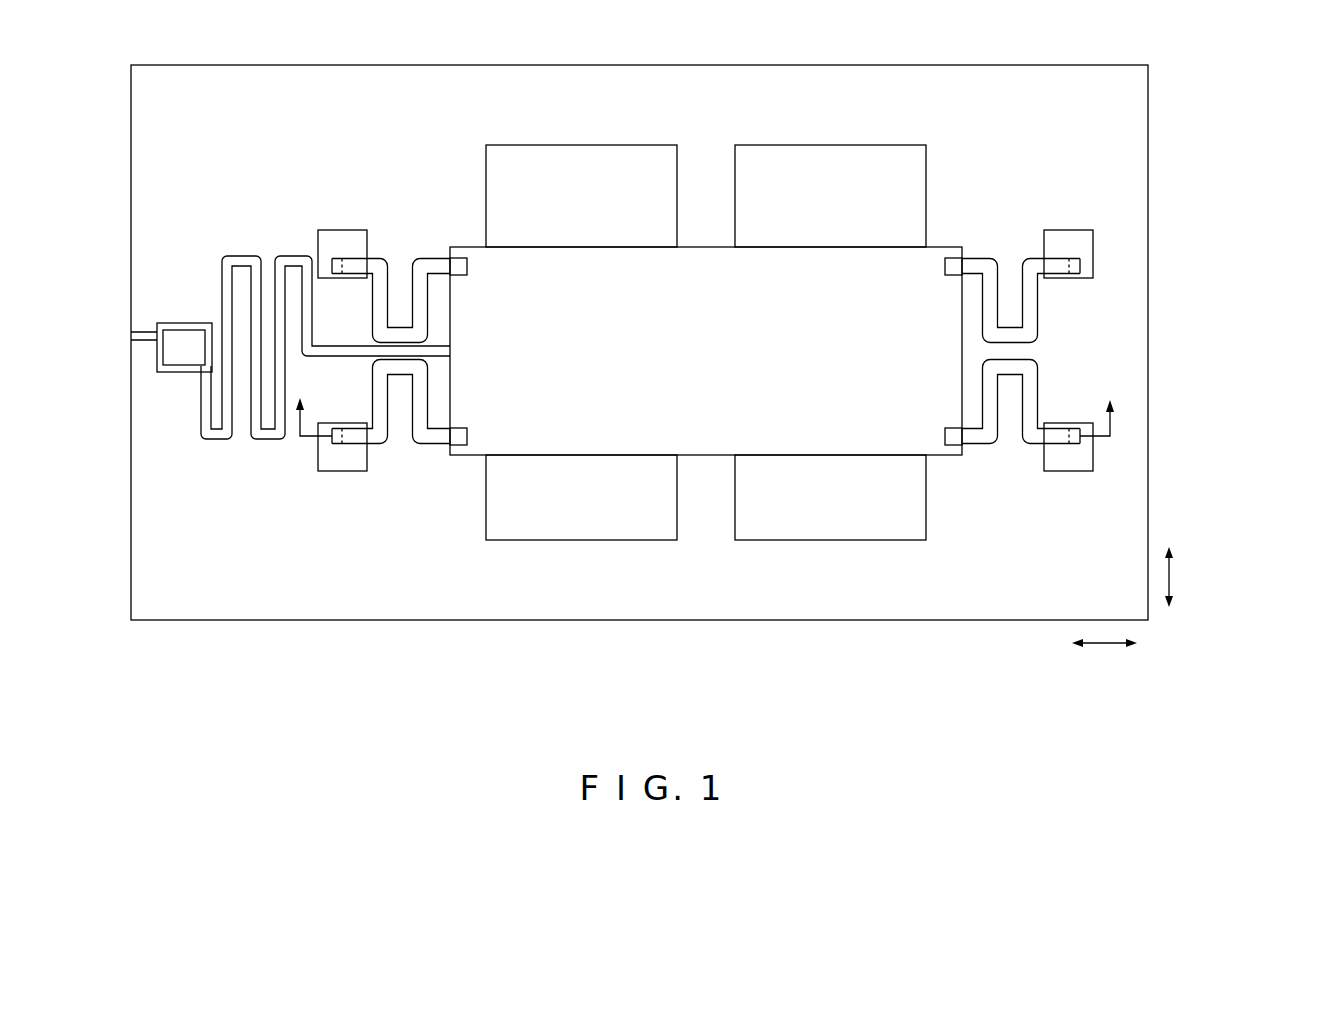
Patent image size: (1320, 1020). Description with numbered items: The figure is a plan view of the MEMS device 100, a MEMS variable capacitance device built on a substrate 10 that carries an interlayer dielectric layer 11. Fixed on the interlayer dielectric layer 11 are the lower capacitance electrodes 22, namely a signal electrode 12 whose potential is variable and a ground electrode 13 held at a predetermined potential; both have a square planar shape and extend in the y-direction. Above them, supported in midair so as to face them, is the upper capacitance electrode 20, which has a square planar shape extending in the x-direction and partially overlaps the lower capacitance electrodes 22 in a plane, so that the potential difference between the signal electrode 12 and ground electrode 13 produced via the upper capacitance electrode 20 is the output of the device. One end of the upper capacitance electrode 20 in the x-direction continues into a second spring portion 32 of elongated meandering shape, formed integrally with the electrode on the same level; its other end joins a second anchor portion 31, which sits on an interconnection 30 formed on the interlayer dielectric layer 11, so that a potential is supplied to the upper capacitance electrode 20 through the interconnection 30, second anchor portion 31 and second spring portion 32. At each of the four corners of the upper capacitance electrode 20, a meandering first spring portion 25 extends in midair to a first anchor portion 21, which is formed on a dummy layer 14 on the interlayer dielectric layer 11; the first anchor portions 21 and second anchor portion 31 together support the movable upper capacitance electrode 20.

The MEMS device 100 is at (968, 140).
The substrate 10 is at (701, 342).
The interlayer dielectric layer 11 is at (1150, 423).
The signal electrode 12 is at (662, 542).
The ground electrode 13 is at (750, 542).
The dummy layer 14 is at (330, 230).
The upper capacitance electrode 20 is at (935, 456).
The first anchor portion 21 is at (342, 258).
The lower capacitance electrodes 22 is at (706, 436).
The first spring portion 25 is at (433, 258).
The interconnection 30 is at (175, 373).
The second anchor portion 31 is at (180, 322).
The second spring portion 32 is at (240, 256).